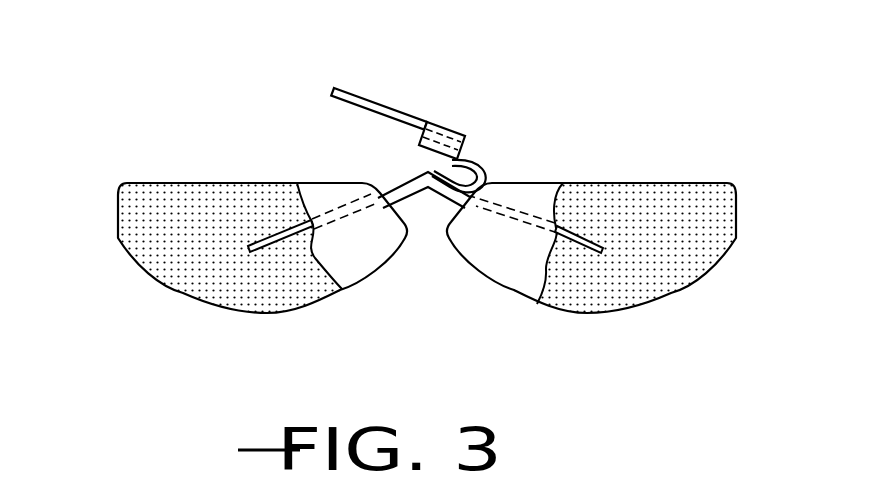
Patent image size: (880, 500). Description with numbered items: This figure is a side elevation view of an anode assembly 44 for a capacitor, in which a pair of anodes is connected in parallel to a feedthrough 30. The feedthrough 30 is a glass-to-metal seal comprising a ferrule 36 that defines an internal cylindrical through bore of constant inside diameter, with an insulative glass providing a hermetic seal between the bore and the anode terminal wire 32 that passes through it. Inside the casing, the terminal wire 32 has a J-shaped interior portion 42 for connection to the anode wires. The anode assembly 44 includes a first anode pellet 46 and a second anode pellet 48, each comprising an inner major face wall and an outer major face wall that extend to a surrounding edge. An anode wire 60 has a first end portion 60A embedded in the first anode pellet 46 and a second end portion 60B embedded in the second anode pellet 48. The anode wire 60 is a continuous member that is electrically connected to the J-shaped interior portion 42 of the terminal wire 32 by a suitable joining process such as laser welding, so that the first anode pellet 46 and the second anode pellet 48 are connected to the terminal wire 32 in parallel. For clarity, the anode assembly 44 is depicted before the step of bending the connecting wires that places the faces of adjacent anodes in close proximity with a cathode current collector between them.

The feedthrough 30 is at (413, 99).
The anode terminal wire 32 is at (365, 99).
The ferrule 36 is at (456, 130).
The J-shaped interior portion 42 is at (440, 167).
The anode assembly 44 is at (583, 152).
The first anode pellet 46 is at (641, 172).
The second anode pellet 48 is at (175, 180).
The anode wire 60 is at (427, 192).
The first end portion 60A is at (603, 250).
The second end portion 60B is at (250, 252).